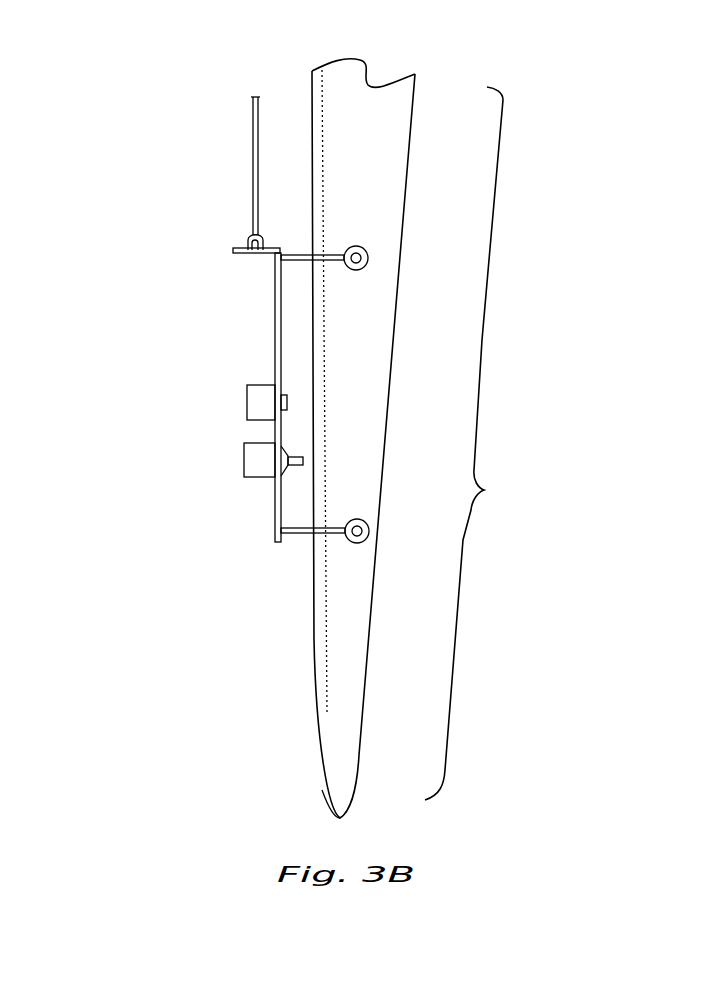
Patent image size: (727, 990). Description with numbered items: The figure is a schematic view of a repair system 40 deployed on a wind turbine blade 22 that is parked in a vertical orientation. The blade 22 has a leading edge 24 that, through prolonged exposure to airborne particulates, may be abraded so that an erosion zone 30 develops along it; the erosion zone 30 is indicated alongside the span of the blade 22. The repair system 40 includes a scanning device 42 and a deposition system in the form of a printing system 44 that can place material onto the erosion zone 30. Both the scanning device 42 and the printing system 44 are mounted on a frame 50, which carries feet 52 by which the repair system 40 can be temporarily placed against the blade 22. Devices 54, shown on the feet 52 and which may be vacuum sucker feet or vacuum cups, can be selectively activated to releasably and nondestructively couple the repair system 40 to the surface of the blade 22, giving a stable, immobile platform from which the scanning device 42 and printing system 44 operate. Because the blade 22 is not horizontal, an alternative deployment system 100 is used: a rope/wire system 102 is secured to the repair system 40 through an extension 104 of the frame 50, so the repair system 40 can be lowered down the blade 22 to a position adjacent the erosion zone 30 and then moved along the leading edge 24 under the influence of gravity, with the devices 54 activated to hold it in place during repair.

The deployment system 100 is at (150, 180).
The rope/wire system 102 is at (253, 170).
The extension 104 is at (231, 251).
The frame 50 is at (277, 545).
The feet 52 is at (341, 253).
The devices 54 is at (368, 258).
The repair system 40 is at (225, 381).
The scanning device 42 is at (247, 402).
The printing system 44 is at (244, 463).
The leading edge 24 is at (316, 632).
The wind turbine blade 22 is at (318, 751).
The erosion zone 30 is at (474, 443).